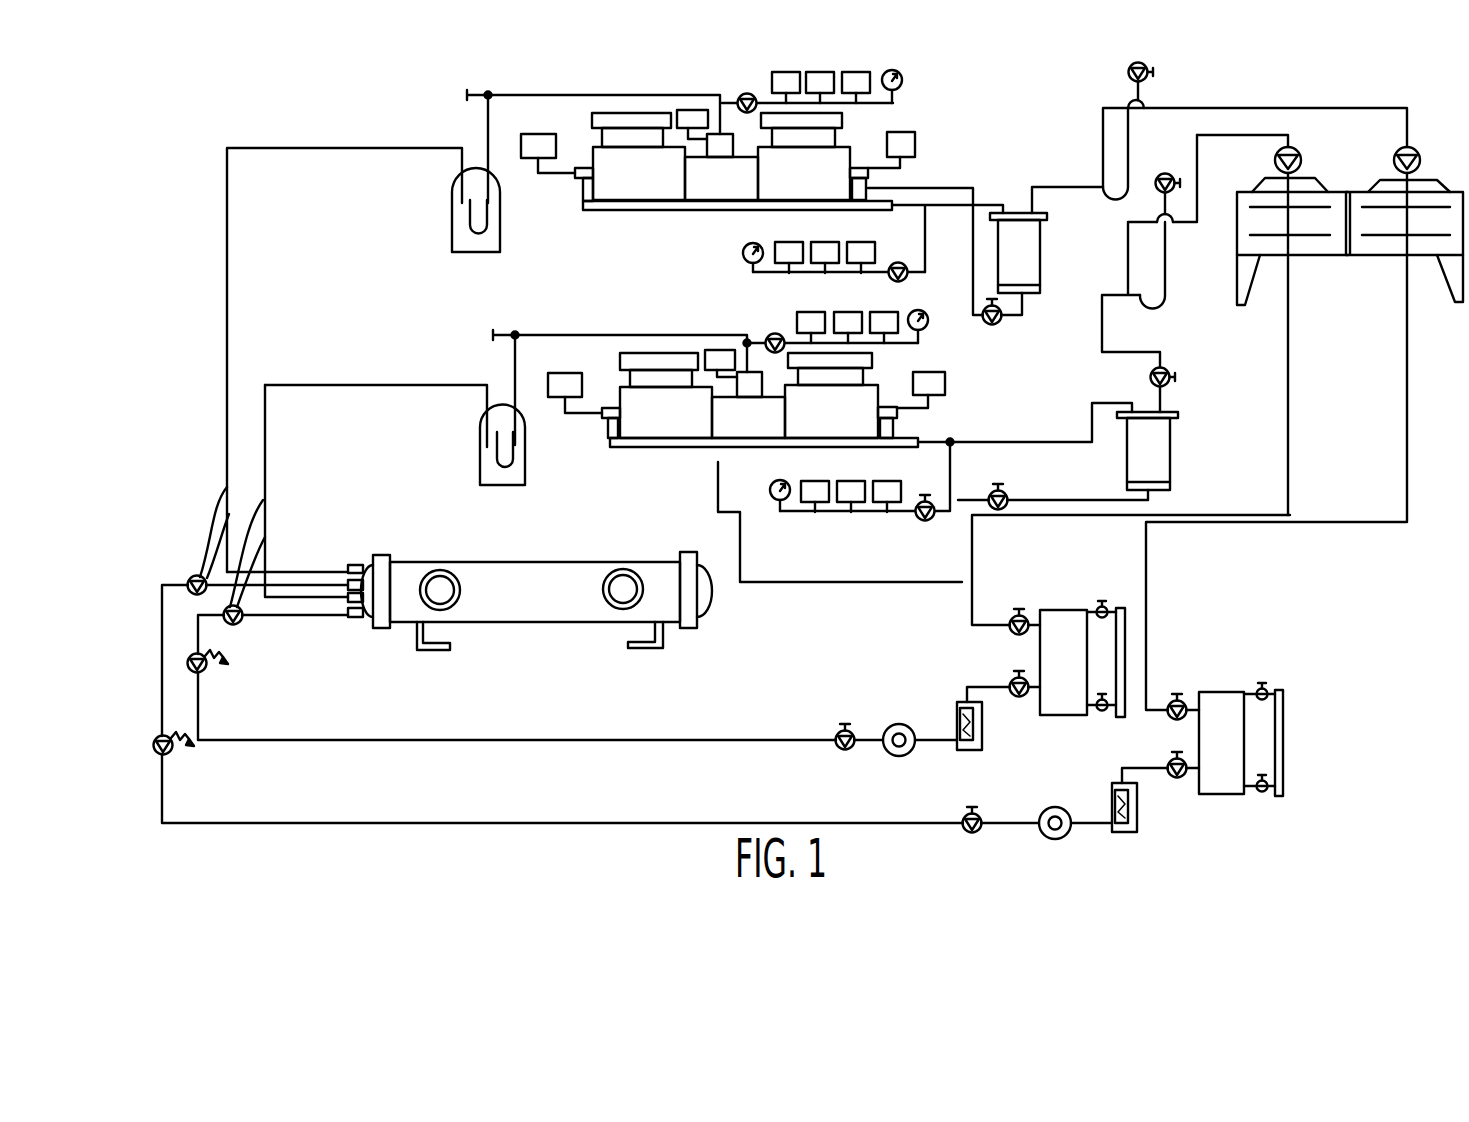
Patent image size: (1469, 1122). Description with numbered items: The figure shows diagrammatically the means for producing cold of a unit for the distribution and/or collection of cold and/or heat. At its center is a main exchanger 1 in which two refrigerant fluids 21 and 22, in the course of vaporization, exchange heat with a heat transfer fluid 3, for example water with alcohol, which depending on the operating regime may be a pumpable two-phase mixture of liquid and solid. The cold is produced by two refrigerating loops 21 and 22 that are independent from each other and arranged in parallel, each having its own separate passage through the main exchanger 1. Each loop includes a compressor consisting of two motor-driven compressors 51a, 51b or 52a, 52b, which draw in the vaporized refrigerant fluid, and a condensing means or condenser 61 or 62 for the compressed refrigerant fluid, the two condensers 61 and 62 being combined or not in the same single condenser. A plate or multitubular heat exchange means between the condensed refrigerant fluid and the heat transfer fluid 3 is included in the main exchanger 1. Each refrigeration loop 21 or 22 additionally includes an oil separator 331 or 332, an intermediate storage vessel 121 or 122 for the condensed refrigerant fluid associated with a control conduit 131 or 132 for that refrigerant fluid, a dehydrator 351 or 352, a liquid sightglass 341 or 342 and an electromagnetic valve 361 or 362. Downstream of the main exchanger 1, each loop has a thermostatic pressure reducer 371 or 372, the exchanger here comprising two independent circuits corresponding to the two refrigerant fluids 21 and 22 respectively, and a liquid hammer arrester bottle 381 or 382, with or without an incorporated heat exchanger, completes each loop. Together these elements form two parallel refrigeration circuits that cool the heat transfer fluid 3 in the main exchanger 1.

The main exchanger 1 is at (522, 583).
The heat transfer fluid 3 is at (443, 588).
The refrigerant fluid 21 is at (1010, 440).
The refrigerant fluid 22 is at (345, 148).
The motor-driven compressor 51a is at (683, 423).
The motor-driven compressor 51b is at (867, 390).
The motor-driven compressor 52a is at (653, 190).
The motor-driven compressor 52b is at (785, 178).
The condenser 61 is at (1245, 228).
The condenser 62 is at (1440, 222).
The intermediate storage vessel 121 is at (1065, 623).
The intermediate storage vessel 122 is at (1218, 707).
The control conduit 131 is at (1137, 617).
The control conduit 132 is at (1301, 744).
The oil separator 331 is at (1153, 450).
The oil separator 332 is at (1018, 253).
The liquid sightglass 341 is at (900, 733).
The liquid sightglass 342 is at (1057, 808).
The dehydrator 351 is at (973, 728).
The dehydrator 352 is at (1135, 810).
The electromagnetic valve 361 is at (202, 670).
The electromagnetic valve 362 is at (170, 753).
The thermostatic pressure reducer 371 is at (243, 618).
The thermostatic pressure reducer 372 is at (193, 578).
The liquid hammer arrester bottle 381 is at (497, 452).
The liquid hammer arrester bottle 382 is at (462, 217).